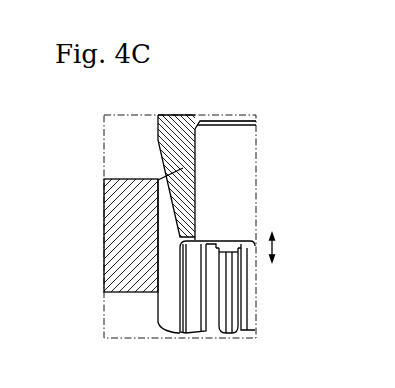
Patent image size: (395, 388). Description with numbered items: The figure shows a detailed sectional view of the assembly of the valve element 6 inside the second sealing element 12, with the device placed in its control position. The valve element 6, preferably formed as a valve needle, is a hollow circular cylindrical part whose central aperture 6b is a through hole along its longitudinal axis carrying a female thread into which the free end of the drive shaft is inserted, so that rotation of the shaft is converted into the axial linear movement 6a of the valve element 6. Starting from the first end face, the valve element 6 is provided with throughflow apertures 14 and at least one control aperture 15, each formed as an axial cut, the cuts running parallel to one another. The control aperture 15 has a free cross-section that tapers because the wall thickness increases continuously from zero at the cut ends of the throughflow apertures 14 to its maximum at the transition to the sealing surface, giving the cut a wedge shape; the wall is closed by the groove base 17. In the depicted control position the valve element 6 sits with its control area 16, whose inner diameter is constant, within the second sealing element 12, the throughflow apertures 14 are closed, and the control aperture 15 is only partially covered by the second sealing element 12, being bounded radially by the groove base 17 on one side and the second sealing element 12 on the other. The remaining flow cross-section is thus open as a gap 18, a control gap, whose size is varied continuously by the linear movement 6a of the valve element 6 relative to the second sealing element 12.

The valve element 6 is at (184, 205).
The control area 16 is at (275, 113).
The linear movement 6a is at (276, 250).
The aperture 6b is at (237, 164).
The second sealing element 12 is at (118, 193).
The throughflow apertures 14 is at (210, 278).
The control aperture 15 is at (167, 295).
The groove base 17 is at (176, 206).
The gap 18 is at (156, 181).